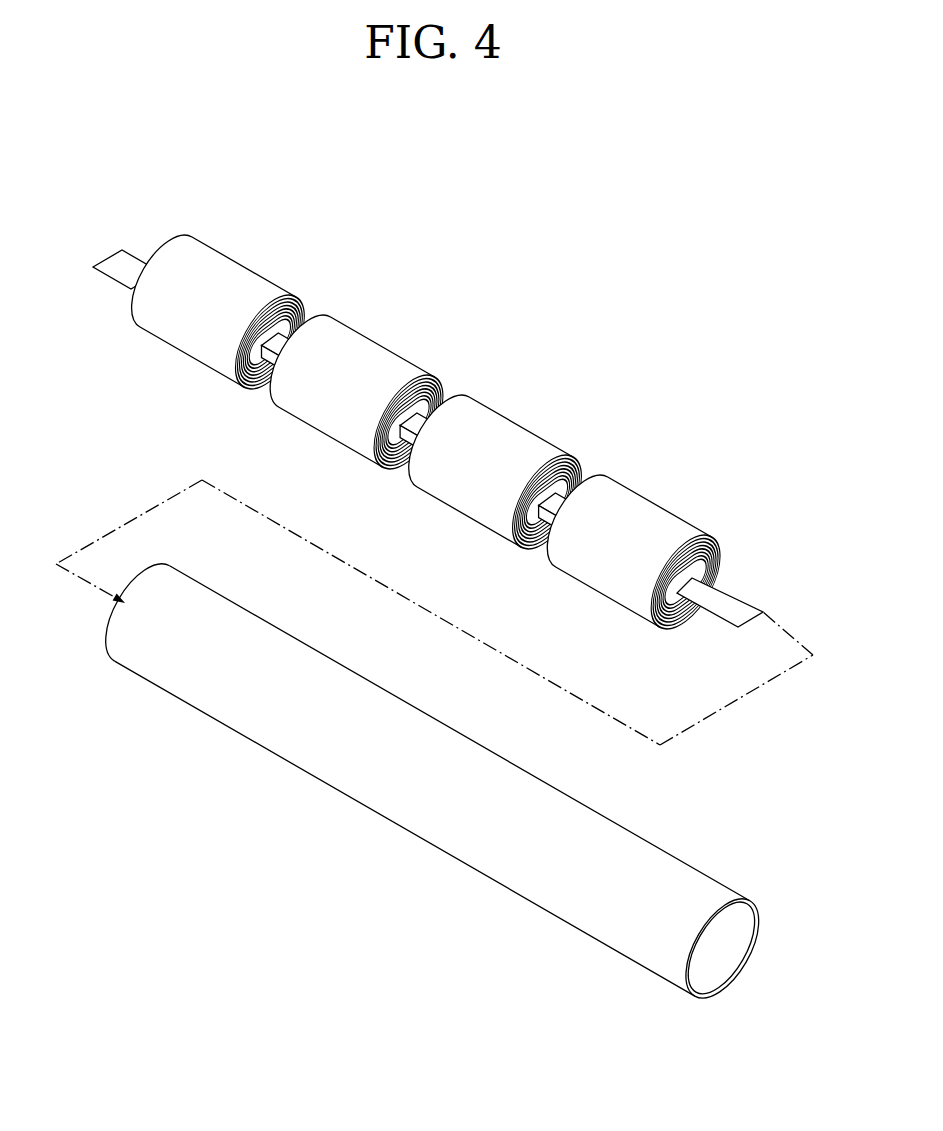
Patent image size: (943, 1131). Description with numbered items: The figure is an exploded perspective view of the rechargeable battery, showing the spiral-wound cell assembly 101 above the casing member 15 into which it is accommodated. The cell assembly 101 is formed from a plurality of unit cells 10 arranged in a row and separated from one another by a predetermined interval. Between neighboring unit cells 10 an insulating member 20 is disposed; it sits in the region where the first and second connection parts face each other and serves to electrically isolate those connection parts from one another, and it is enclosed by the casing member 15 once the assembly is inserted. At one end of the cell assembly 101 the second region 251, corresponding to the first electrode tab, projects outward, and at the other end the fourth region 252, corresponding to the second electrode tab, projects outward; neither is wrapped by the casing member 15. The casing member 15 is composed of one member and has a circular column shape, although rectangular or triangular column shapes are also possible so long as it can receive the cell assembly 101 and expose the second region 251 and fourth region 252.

The unit cell 10 is at (243, 276).
The casing member 15 is at (400, 812).
The insulating member 20 is at (265, 371).
The cell assembly 101 is at (453, 420).
The second region 251 is at (738, 610).
The fourth region 252 is at (127, 266).